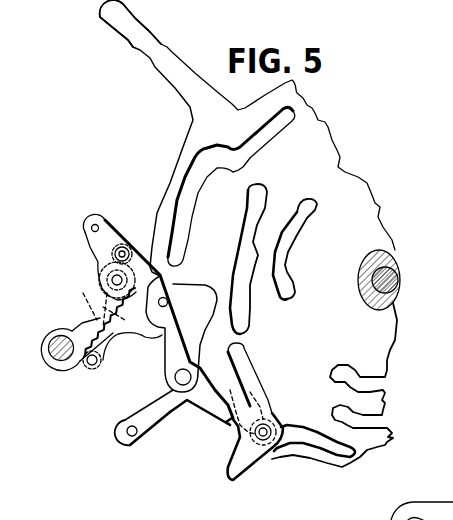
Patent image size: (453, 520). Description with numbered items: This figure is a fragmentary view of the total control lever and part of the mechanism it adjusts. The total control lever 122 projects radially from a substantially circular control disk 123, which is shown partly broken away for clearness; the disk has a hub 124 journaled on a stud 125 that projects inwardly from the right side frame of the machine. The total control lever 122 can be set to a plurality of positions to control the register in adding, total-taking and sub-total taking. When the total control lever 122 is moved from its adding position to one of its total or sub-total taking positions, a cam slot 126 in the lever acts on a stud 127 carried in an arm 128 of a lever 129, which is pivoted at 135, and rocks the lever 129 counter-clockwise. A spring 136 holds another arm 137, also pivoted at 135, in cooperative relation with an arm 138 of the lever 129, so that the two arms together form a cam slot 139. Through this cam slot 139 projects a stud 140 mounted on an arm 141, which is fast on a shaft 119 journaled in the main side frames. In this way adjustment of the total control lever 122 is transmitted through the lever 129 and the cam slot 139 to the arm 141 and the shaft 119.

The shaft 119 is at (65, 364).
The total control lever 122 is at (149, 40).
The control disk 123 is at (340, 154).
The hub 124 is at (358, 275).
The stud 125 is at (361, 293).
The cam slot 126 is at (250, 373).
The stud 127 is at (270, 426).
The arm 128 is at (227, 418).
The lever 129 is at (171, 401).
The pivot 135 is at (174, 376).
The spring 136 is at (96, 303).
The arm 137 is at (172, 284).
The arm 138 is at (141, 338).
The cam slot 139 is at (168, 302).
The stud 140 is at (112, 278).
The arm 141 is at (80, 322).